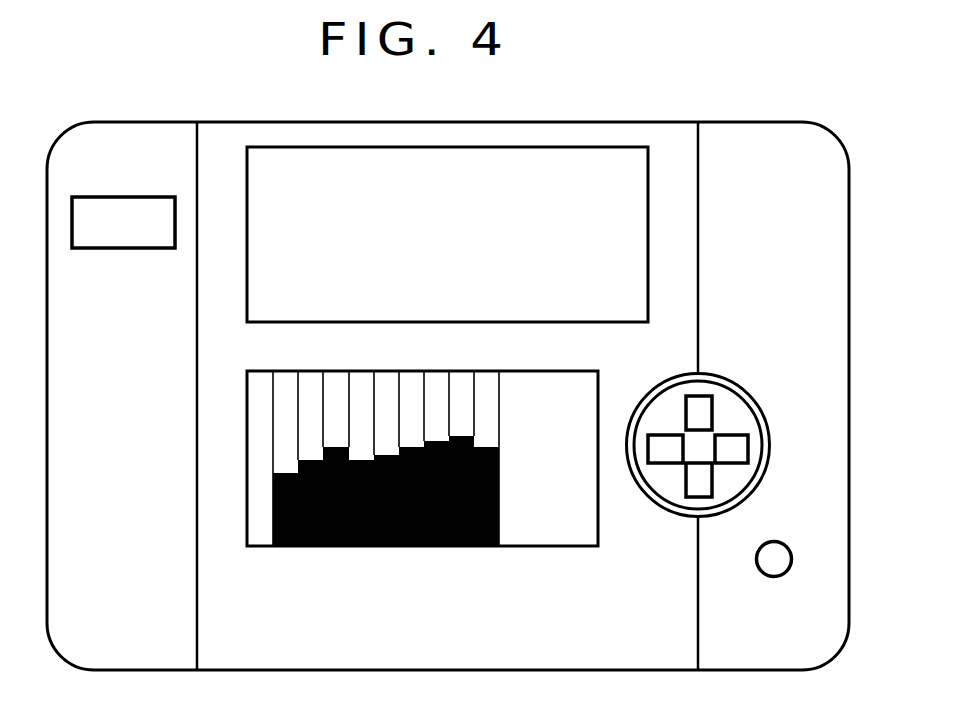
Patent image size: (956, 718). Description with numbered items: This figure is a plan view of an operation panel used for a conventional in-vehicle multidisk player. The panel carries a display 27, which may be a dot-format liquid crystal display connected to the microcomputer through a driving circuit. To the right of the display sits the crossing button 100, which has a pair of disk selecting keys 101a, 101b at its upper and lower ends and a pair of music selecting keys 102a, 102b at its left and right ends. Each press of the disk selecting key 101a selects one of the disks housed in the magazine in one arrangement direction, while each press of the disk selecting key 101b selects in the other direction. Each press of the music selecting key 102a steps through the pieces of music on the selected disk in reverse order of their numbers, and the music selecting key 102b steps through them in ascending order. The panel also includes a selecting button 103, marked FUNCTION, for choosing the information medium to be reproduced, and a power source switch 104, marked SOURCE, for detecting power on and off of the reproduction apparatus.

The display 27 is at (286, 323).
The crossing button 100 is at (678, 378).
The disk selecting key 101a is at (700, 410).
The disk selecting key 101b is at (700, 480).
The music selecting key 102a is at (667, 452).
The music selecting key 102b is at (733, 445).
The selecting button 103 is at (778, 553).
The power source switch 104 is at (103, 249).